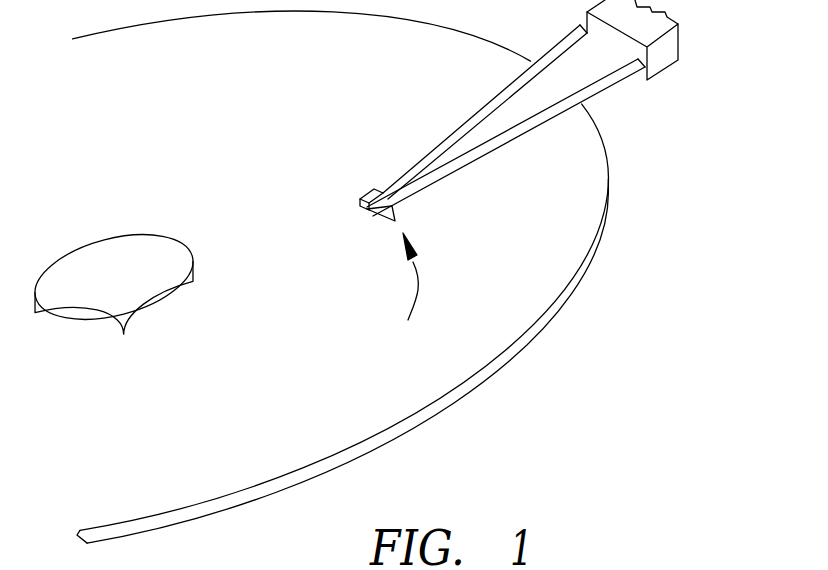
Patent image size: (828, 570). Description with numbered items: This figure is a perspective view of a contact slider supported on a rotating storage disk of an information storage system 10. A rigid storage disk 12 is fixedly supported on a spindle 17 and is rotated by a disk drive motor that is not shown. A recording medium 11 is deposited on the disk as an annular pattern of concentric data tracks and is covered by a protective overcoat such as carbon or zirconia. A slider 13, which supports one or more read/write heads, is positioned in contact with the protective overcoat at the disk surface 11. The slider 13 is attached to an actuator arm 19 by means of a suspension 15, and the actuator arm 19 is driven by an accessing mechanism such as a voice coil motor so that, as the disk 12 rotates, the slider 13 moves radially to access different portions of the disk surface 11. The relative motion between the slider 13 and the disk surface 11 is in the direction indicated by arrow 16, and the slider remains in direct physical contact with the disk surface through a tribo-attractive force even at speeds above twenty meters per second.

The magnetic disk 10 is at (383, 277).
The recording medium 11 is at (560, 193).
The rigid storage disk 12 is at (608, 202).
The slider 13 is at (397, 212).
The suspension 15 is at (588, 83).
The arrow 16 is at (420, 282).
The spindle 17 is at (120, 288).
The actuator arm 19 is at (684, 40).